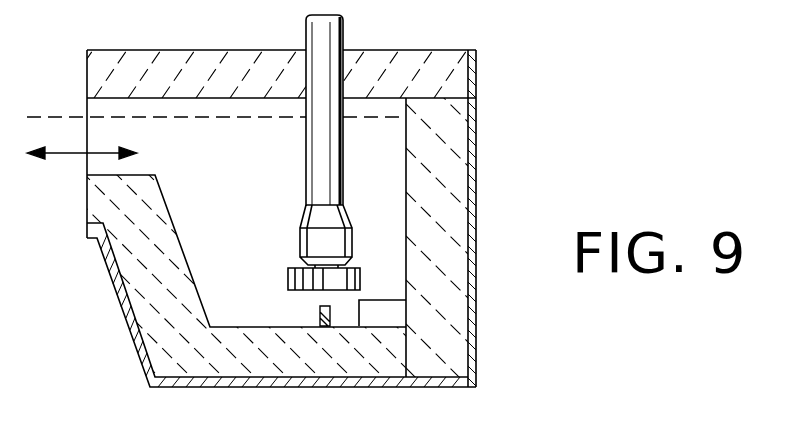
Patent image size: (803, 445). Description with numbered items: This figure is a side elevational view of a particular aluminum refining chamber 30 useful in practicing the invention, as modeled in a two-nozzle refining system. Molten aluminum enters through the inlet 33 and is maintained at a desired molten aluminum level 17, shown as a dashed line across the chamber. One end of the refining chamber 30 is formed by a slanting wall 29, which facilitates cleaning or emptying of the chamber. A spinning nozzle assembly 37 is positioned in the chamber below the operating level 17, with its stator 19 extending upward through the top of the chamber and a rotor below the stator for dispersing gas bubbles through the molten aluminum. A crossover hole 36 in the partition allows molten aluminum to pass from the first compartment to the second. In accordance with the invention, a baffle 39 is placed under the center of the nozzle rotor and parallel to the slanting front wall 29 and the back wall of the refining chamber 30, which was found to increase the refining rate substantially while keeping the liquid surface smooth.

The molten aluminum level 17 is at (70, 116).
The stator 19 is at (343, 167).
The slanting wall 29 is at (180, 234).
The refining chamber 30 is at (257, 388).
The inlet 33 is at (102, 166).
The crossover hole 36 is at (390, 313).
The spinning nozzle assembly 37 is at (352, 240).
The baffle 39 is at (331, 312).